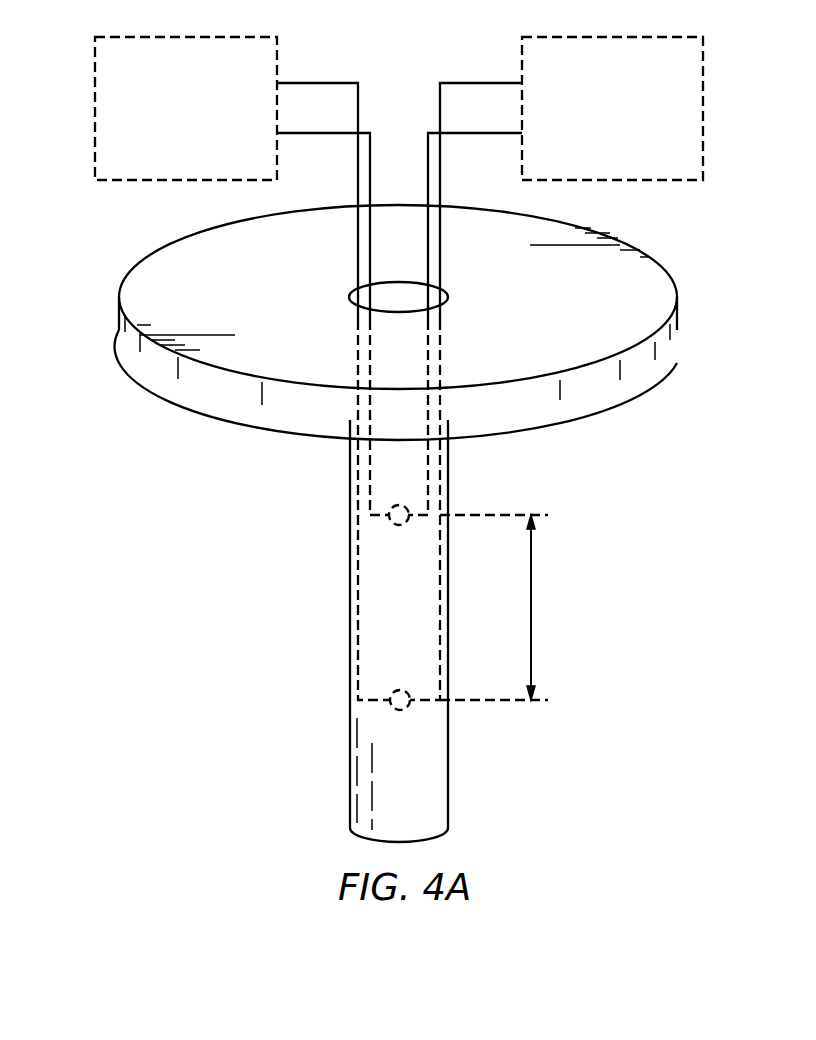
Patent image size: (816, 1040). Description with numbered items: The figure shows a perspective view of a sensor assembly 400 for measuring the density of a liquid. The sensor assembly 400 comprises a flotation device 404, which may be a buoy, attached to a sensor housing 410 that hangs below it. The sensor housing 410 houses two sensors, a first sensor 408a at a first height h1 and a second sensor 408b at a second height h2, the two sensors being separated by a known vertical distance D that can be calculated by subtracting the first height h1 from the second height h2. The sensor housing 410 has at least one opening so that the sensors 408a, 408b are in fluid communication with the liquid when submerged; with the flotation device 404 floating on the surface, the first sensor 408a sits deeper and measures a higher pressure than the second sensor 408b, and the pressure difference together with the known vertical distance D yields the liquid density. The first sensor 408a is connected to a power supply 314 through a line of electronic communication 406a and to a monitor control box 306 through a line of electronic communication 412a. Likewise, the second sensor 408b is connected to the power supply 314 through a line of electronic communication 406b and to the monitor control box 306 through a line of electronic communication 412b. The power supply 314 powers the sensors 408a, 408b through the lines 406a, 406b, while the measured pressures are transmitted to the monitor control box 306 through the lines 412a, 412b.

The sensor assembly 400 is at (162, 721).
The power supply 314 is at (95, 110).
The monitor control box 306 is at (703, 110).
The flotation device 404 is at (210, 380).
The sensor housing 410 is at (350, 812).
The line of electronic communication 406a is at (350, 620).
The line of electronic communication 406b is at (370, 463).
The line of electronic communication 412a is at (440, 612).
The line of electronic communication 412b is at (430, 460).
The first sensor 408a is at (402, 708).
The second sensor 408b is at (397, 524).
The first height h1 is at (540, 702).
The second height h2 is at (540, 515).
The known vertical distance D is at (532, 605).